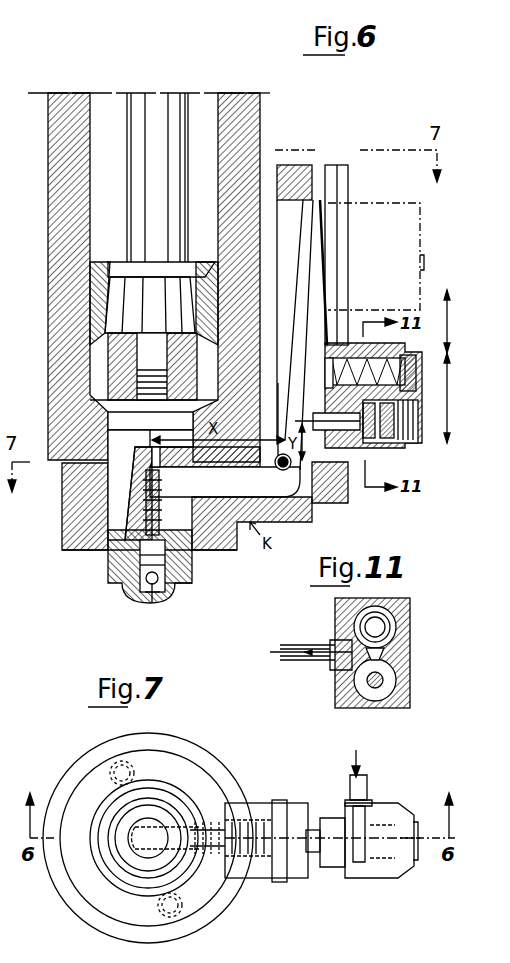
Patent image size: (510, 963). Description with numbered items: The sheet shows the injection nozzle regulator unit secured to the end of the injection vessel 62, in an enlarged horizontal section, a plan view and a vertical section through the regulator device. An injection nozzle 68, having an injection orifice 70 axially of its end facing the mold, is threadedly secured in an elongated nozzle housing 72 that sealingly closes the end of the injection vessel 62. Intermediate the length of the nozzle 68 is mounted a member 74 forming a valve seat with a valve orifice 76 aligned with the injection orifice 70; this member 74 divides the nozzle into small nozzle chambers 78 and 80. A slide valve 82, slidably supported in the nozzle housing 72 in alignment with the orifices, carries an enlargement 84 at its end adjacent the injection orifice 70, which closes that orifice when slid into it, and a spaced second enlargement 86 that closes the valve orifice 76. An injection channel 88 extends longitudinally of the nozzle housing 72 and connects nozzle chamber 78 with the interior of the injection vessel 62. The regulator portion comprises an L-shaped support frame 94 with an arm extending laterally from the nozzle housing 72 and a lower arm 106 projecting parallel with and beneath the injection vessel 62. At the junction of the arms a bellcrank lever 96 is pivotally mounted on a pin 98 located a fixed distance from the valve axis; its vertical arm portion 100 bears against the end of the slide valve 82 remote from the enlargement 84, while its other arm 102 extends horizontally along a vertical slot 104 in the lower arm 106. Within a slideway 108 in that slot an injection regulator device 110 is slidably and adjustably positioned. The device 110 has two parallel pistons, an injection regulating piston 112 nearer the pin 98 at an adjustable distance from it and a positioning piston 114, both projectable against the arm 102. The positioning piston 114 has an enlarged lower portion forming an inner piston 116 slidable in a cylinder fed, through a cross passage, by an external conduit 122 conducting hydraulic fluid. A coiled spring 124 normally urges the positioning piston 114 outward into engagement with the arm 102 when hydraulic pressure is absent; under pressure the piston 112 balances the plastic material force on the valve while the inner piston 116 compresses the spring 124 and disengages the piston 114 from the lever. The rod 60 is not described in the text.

In FIG. 6, the piston rod 60 is at (100, 166).
In FIG. 6, the injection vessel 62 is at (58, 250).
In FIG. 7, the injection vessel 62 is at (92, 926).
In FIG. 6, the injection nozzle 68 is at (100, 552).
In FIG. 7, the injection orifice 70 is at (148, 822).
In FIG. 6, the nozzle housing 72 is at (70, 490).
In FIG. 6, the valve seat member 74 is at (170, 598).
In FIG. 6, the valve orifice 76 is at (138, 568).
In FIG. 6, the nozzle chamber 78 is at (124, 558).
In FIG. 6, the nozzle chamber 80 is at (140, 590).
In FIG. 6, the slide valve 82 is at (192, 558).
In FIG. 6, the enlargement 84 is at (147, 600).
In FIG. 6, the second enlargement 86 is at (195, 578).
In FIG. 6, the injection channel 88 is at (125, 466).
In FIG. 7, the injection channel 88 is at (125, 855).
In FIG. 7, the L-shaped support frame 94 is at (262, 805).
In FIG. 7, the bellcrank lever 96 is at (232, 838).
In FIG. 7, the pin 98 is at (278, 884).
In FIG. 6, the vertical arm portion 100 is at (242, 508).
In FIG. 6, the arm 102 is at (315, 248).
In FIG. 7, the arm 102 is at (312, 830).
In FIG. 6, the vertical slot 104 is at (290, 218).
In FIG. 6, the lower arm 106 is at (290, 165).
In FIG. 7, the lower arm 106 is at (308, 880).
In FIG. 6, the slideway 108 is at (333, 165).
In FIG. 7, the slideway 108 is at (330, 818).
In FIG. 6, the injection regulator device 110 is at (405, 448).
In FIG. 7, the injection regulator device 110 is at (378, 880).
In FIG. 11, the injection regulator device 110 is at (403, 690).
In FIG. 6, the injection regulating piston 112 is at (320, 412).
In FIG. 11, the injection regulating piston 112 is at (378, 684).
In FIG. 6, the positioning piston 114 is at (326, 373).
In FIG. 11, the positioning piston 114 is at (384, 630).
In FIG. 6, the inner piston 116 is at (403, 345).
In FIG. 11, the external conduit 122 is at (325, 650).
In FIG. 6, the coiled spring 124 is at (418, 367).